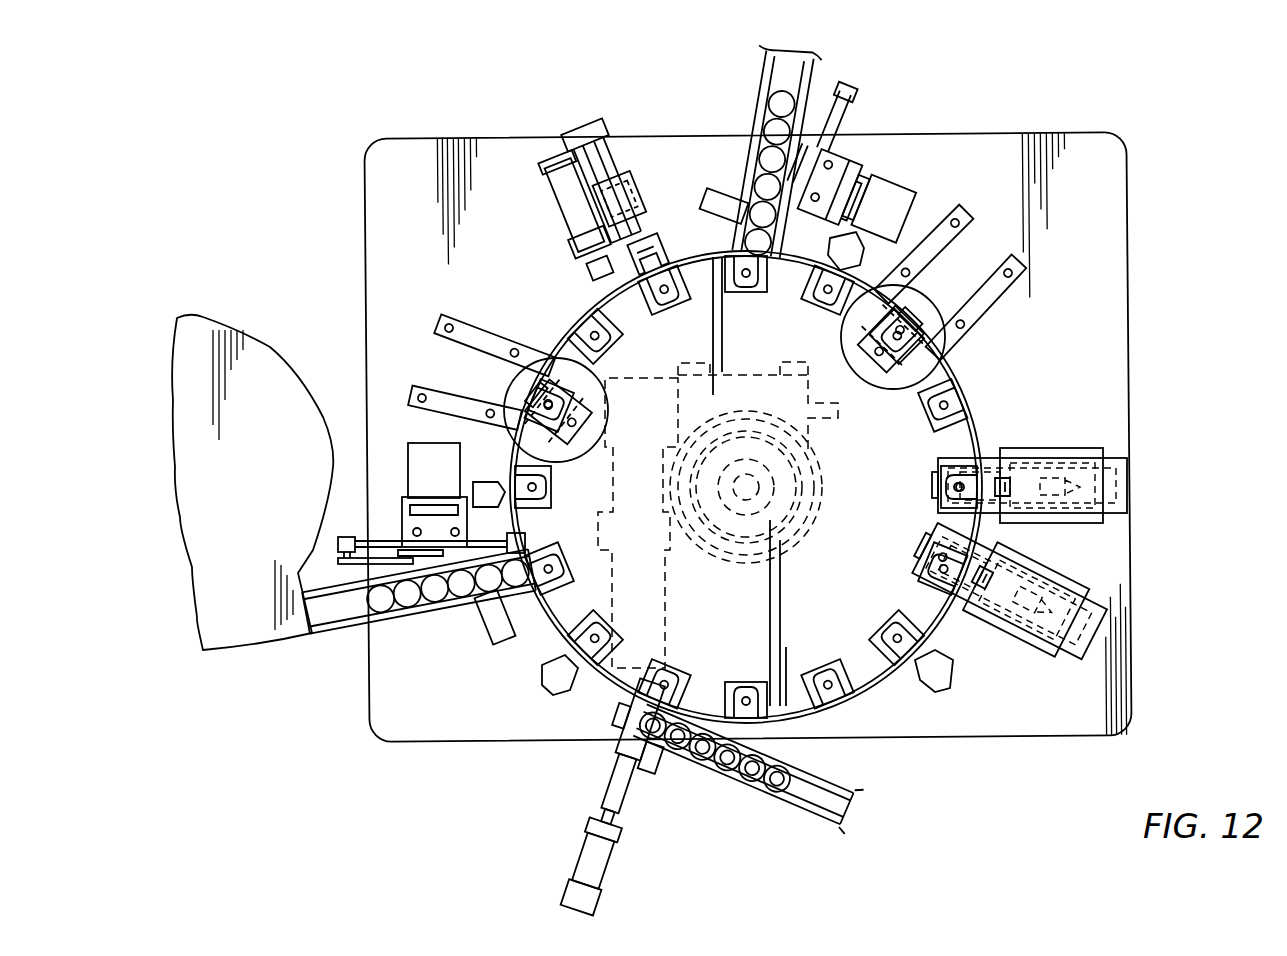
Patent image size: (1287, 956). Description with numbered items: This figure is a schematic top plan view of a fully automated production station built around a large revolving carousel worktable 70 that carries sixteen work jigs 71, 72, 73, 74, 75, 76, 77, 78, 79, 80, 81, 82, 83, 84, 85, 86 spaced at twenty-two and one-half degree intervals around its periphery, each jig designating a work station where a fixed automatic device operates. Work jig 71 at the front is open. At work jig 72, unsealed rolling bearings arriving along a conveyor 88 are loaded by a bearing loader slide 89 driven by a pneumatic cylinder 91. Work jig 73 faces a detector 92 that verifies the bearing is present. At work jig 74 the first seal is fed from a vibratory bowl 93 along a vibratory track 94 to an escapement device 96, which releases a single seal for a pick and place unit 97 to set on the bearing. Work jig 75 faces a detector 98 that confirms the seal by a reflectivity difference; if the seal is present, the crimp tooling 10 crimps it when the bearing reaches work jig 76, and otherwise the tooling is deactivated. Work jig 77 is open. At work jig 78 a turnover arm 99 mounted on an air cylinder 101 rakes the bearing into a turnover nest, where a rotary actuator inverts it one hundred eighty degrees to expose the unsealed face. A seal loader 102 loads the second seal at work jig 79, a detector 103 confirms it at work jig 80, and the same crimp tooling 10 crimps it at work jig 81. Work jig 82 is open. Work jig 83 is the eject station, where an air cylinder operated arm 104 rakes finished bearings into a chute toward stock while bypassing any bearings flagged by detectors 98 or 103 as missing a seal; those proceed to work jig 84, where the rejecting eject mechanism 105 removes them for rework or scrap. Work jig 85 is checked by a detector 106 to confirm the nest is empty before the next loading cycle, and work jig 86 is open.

The crimp tooling 10 is at (545, 340).
The carousel worktable 70 is at (880, 690).
The work jig 71 is at (740, 678).
The work jig 72 is at (690, 682).
The work jig 73 is at (628, 638).
The work jig 74 is at (565, 570).
The work jig 75 is at (556, 505).
The work jig 76 is at (596, 412).
The work jig 77 is at (605, 355).
The work jig 78 is at (686, 300).
The work jig 79 is at (754, 297).
The work jig 80 is at (830, 312).
The work jig 81 is at (858, 373).
The work jig 82 is at (925, 427).
The work jig 83 is at (936, 466).
The work jig 84 is at (935, 542).
The work jig 85 is at (900, 608).
The work jig 86 is at (832, 640).
The conveyor 88 is at (738, 780).
The bearing loader slide 89 is at (620, 778).
The pneumatic cylinder 91 is at (585, 875).
The detector 92 is at (540, 682).
The vibratory bowl 93 is at (325, 405).
The vibratory track 94 is at (328, 632).
The escapement device 96 is at (490, 610).
The pick and place unit 97 is at (418, 463).
The detector 98 is at (494, 485).
The turnover arm 99 is at (664, 240).
The air cylinder 101 is at (567, 190).
The seal loader 102 is at (752, 180).
The detector 103 is at (868, 236).
The air cylinder operated arm 104 is at (985, 450).
The rejecting eject mechanism 105 is at (990, 552).
The detector 106 is at (940, 672).